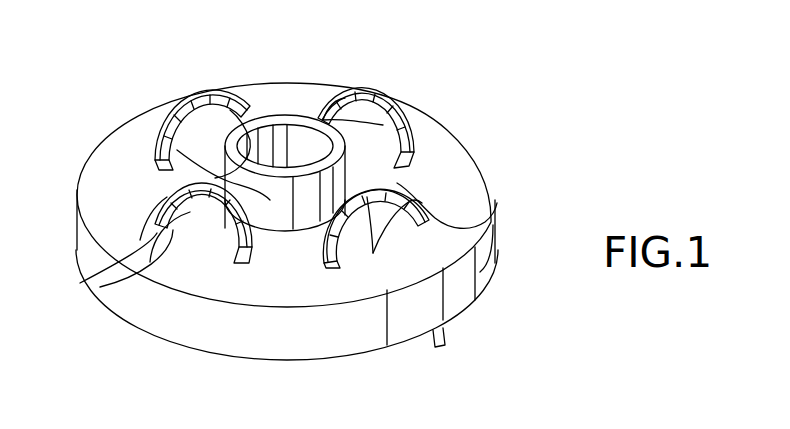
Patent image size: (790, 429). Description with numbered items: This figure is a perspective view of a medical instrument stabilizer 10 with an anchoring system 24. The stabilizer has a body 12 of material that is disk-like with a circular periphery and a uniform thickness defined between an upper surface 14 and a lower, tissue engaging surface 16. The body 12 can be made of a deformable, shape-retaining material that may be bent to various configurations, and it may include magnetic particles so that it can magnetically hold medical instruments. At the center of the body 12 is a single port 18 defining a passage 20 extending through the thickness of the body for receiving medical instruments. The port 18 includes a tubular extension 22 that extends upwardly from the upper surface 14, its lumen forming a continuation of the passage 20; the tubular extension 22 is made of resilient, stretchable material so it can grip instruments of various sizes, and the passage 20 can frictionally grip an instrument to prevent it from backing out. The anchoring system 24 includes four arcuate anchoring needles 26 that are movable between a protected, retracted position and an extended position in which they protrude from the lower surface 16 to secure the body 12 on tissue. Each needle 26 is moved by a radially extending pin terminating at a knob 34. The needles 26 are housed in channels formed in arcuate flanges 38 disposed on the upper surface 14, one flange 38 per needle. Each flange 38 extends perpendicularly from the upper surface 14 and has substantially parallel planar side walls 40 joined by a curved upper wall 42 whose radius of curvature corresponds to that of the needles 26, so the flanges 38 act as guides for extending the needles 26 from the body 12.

The medical instrument stabilizer 10 is at (437, 60).
The body 12 is at (482, 198).
The upper surface 14 is at (97, 182).
The lower surface 16 is at (440, 347).
The port 18 is at (284, 114).
The passage 20 is at (313, 151).
The tubular extension 22 is at (280, 210).
The anchoring system 24 is at (188, 97).
The anchoring needles 26 is at (176, 99).
The knob 34 is at (420, 132).
The flanges 38 is at (237, 115).
The side walls 40 is at (163, 125).
The upper wall 42 is at (158, 147).